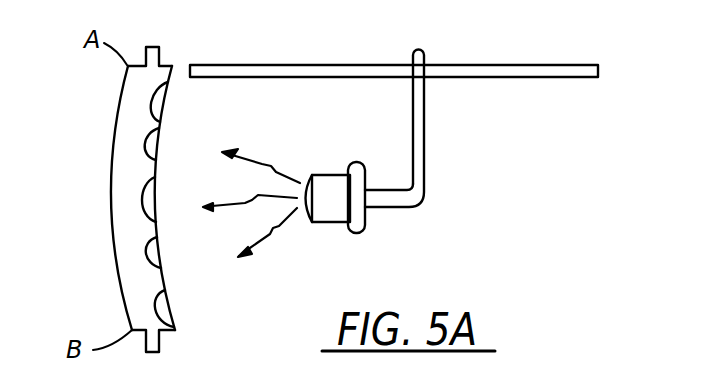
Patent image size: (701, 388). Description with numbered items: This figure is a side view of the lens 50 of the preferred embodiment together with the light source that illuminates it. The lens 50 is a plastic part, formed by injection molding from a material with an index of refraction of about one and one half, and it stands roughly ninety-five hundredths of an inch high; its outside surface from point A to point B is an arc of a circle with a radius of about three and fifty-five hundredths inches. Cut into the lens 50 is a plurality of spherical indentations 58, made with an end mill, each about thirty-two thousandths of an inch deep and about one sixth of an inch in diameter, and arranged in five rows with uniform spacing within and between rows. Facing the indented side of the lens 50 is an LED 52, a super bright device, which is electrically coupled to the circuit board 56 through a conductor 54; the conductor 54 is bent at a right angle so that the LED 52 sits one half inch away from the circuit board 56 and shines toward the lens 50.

The lens 50 is at (120, 107).
The LED 52 is at (333, 223).
The conductor 54 is at (425, 143).
The circuit board 56 is at (567, 63).
The spherical indentation 58 is at (152, 187).